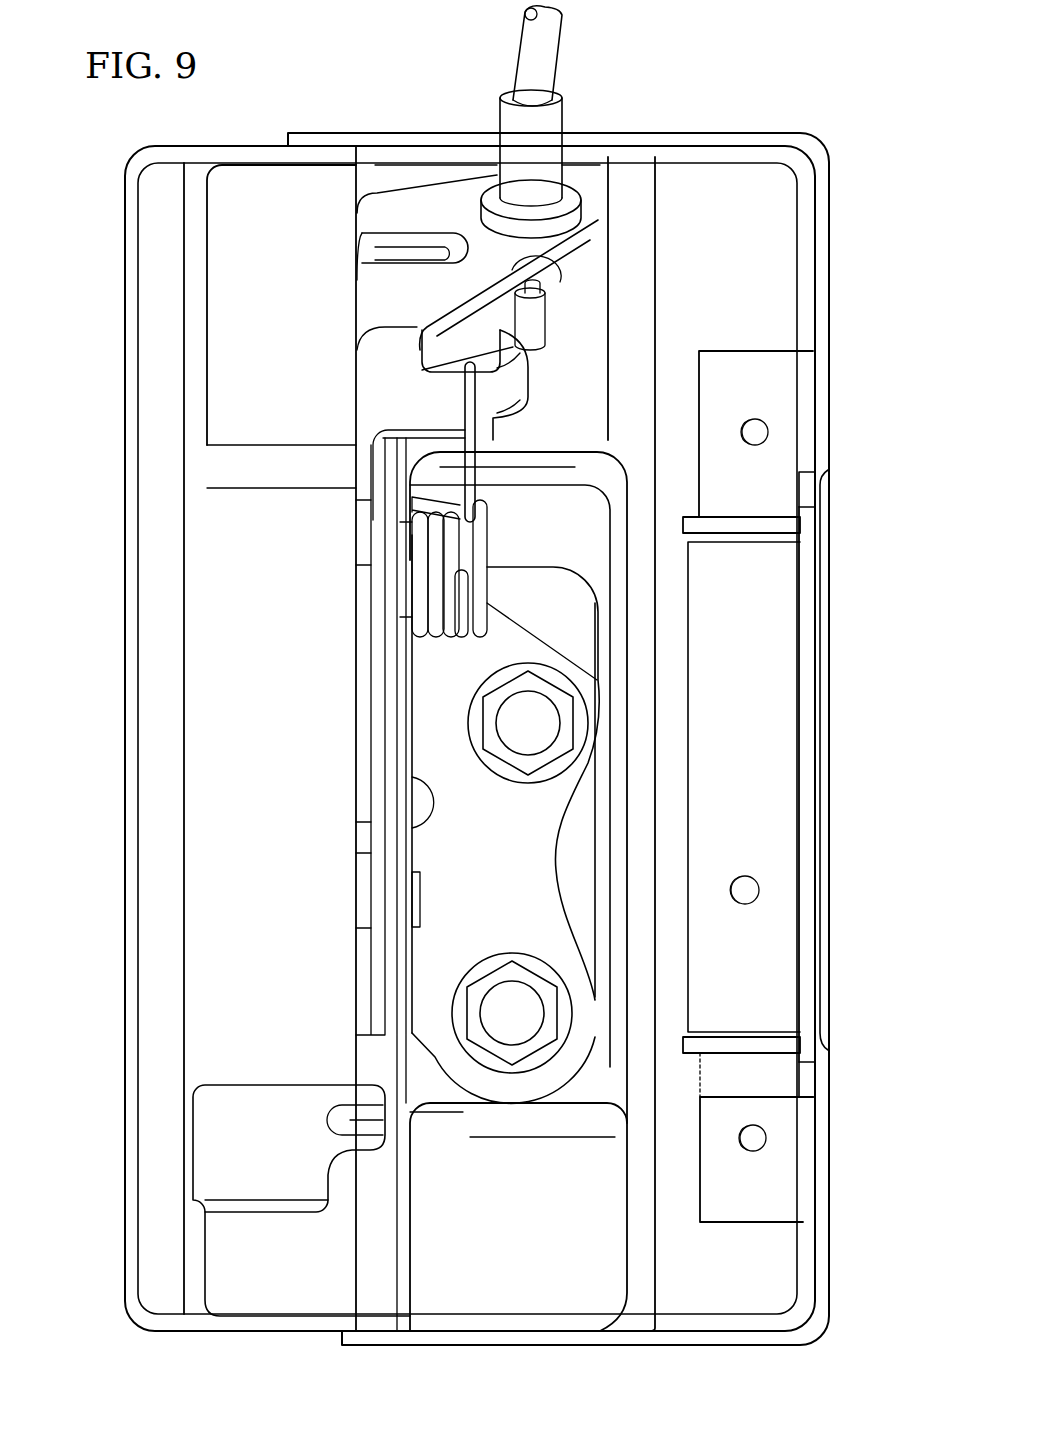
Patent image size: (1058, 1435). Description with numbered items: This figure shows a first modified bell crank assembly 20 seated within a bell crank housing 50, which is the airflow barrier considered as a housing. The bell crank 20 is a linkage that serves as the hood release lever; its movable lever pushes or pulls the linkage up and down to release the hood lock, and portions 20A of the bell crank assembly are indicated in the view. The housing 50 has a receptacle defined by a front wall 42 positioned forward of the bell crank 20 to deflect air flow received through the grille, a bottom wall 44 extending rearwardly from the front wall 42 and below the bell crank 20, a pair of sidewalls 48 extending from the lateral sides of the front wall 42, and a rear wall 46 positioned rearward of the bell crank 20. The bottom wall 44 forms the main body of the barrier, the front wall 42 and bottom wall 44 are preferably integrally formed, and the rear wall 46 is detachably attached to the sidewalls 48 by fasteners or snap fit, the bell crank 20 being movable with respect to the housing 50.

The bell crank assembly 20 is at (722, 118).
The mounting portion 20A is at (508, 643).
The front wall 42 is at (135, 455).
The bottom wall 44 is at (627, 530).
The rear wall 46 is at (818, 598).
The sidewalls 48 is at (385, 140).
The bell crank housing 50 is at (107, 258).